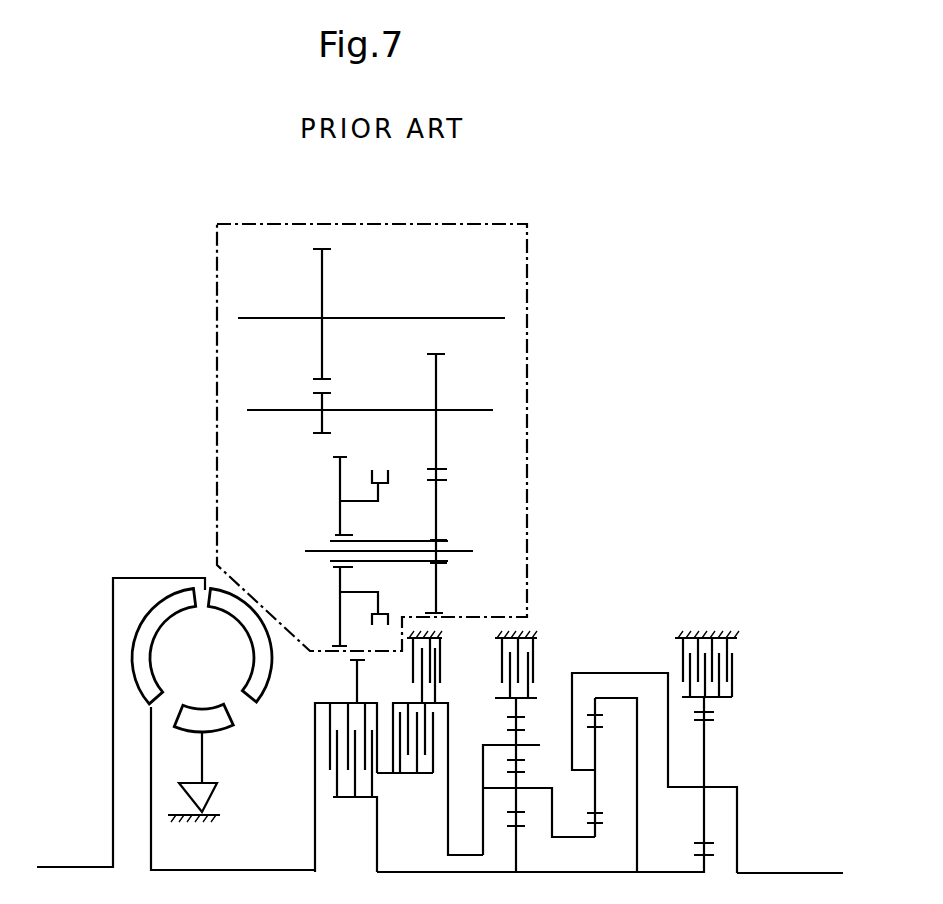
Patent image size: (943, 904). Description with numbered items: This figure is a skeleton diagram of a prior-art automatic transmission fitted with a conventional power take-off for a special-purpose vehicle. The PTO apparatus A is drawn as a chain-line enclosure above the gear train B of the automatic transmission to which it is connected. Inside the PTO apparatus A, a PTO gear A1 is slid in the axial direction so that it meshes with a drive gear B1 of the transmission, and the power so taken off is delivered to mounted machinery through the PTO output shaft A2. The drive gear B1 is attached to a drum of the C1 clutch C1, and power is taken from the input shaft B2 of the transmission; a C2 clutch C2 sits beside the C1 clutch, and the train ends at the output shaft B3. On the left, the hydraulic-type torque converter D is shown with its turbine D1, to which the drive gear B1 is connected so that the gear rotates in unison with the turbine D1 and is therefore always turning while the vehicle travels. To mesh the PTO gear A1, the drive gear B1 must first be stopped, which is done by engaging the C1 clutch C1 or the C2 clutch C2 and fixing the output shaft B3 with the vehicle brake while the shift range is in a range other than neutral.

The PTO apparatus A is at (527, 300).
The PTO gear A1 is at (340, 605).
The PTO output shaft A2 is at (427, 318).
The gear train of the automatic transmission B is at (620, 602).
The drive gear B1 is at (357, 673).
The input shaft B2 is at (255, 867).
The output shaft B3 is at (790, 873).
The C1 clutch C1 is at (346, 787).
The C2 clutch C2 is at (430, 779).
The hydraulic-type torque converter D is at (184, 567).
The turbine D1 is at (143, 665).